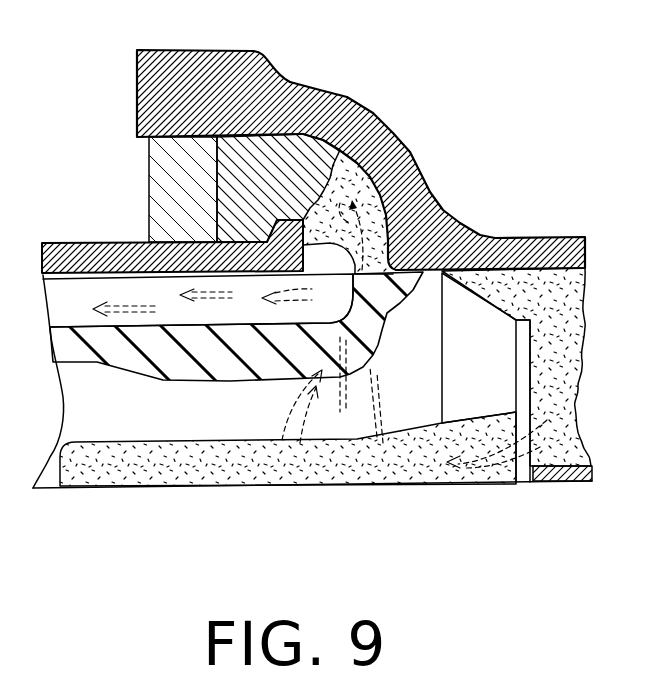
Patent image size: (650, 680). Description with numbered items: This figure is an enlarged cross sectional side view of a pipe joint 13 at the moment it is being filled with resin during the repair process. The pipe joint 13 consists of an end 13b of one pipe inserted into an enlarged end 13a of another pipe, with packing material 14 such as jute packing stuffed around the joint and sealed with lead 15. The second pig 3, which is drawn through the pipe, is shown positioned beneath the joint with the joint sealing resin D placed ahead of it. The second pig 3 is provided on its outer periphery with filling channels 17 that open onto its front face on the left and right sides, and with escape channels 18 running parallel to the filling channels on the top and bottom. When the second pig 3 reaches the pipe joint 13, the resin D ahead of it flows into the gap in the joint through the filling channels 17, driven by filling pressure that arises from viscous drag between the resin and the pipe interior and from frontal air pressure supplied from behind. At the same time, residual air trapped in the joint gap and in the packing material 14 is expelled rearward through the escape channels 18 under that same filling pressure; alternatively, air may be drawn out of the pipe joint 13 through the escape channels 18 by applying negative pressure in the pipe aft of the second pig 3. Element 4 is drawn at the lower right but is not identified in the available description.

The pipe joint 13 is at (418, 108).
The enlarged end 13a is at (210, 62).
The end of pipe 13b is at (412, 150).
The packing material 14 is at (338, 140).
The lead 15 is at (158, 200).
The second pig 3 is at (472, 305).
The joint sealing resin D is at (556, 258).
The escape channels 18 is at (180, 313).
The filling channels 17 is at (213, 467).
The base plate 4 is at (563, 482).